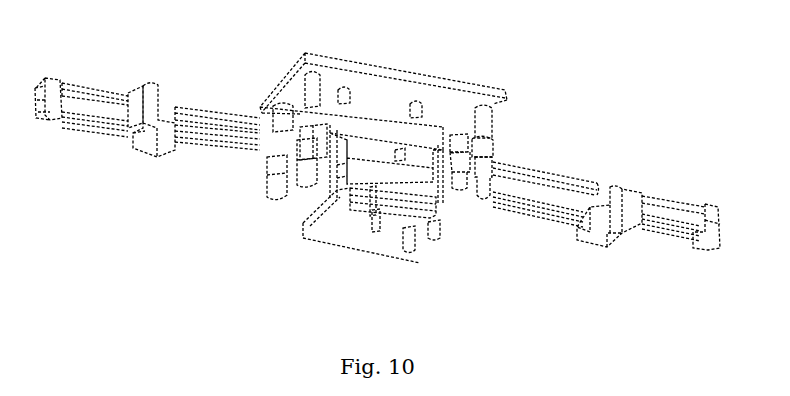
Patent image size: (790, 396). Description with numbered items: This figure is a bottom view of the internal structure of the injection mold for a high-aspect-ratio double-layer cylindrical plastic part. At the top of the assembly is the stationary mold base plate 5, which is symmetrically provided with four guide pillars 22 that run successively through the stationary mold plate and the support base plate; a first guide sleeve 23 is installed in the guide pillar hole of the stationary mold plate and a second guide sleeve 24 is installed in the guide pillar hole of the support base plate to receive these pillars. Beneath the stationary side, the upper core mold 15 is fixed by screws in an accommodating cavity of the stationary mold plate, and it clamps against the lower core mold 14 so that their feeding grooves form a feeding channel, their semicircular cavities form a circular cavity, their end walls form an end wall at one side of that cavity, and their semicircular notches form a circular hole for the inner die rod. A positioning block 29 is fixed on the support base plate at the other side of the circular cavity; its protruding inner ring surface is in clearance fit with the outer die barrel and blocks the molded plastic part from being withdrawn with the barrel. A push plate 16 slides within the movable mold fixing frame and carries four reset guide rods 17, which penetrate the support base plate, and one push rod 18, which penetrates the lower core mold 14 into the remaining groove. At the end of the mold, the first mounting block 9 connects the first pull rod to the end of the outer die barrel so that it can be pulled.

The stationary mold base plate 5 is at (390, 133).
The upper core mold 15 is at (386, 165).
The guide pillar 22 is at (486, 127).
The first guide sleeve 23 is at (483, 150).
The second guide sleeve 24 is at (490, 165).
The reset guide rod 17 is at (341, 172).
The push rod 18 is at (372, 187).
The lower core mold 14 is at (390, 183).
The push plate 16 is at (412, 243).
The positioning block 29 is at (432, 232).
The first mounting block 9 is at (455, 190).